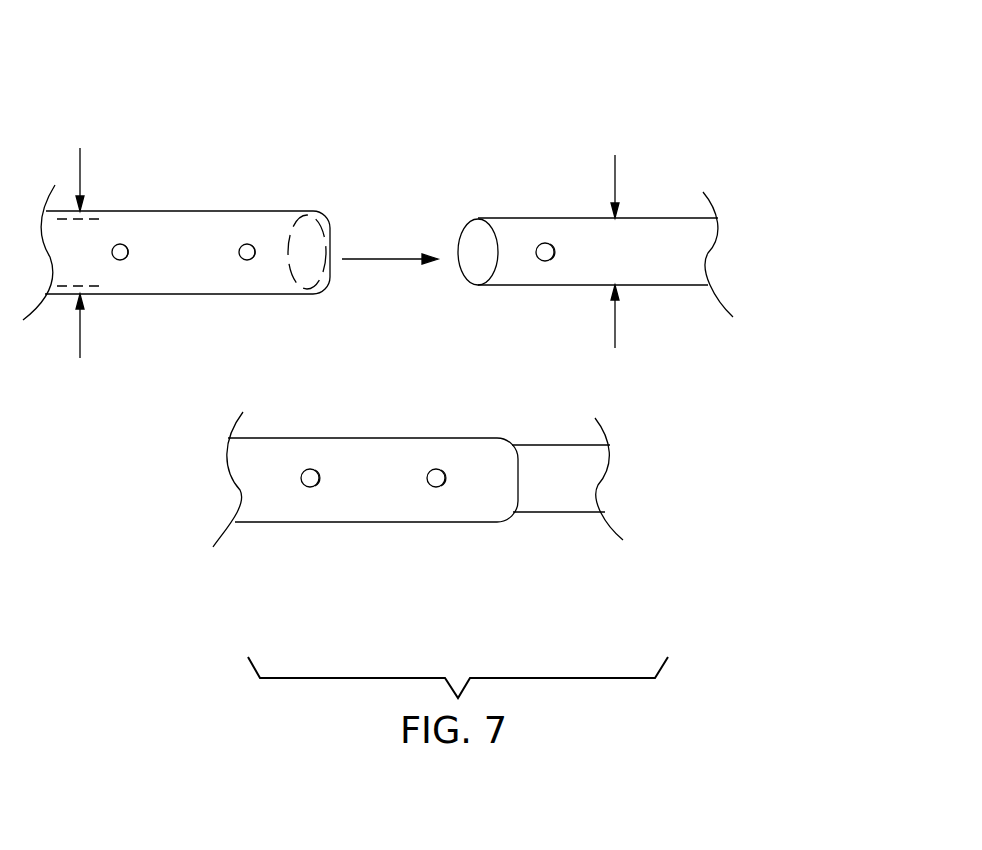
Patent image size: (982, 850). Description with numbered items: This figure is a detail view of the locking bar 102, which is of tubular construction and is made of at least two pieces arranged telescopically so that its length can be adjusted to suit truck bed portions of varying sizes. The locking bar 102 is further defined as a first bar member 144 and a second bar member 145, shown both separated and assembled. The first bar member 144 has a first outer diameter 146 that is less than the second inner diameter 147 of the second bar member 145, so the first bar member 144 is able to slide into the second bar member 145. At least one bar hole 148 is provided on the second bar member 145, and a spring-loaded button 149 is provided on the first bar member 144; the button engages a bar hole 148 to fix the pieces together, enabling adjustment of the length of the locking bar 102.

The locking bar 102 is at (118, 82).
The first bar member 144 is at (499, 218).
The second bar member 145 is at (184, 211).
The first outer diameter 146 is at (615, 232).
The second inner diameter 147 is at (83, 233).
The bar hole 148 is at (244, 260).
The spring-loaded button 149 is at (548, 261).